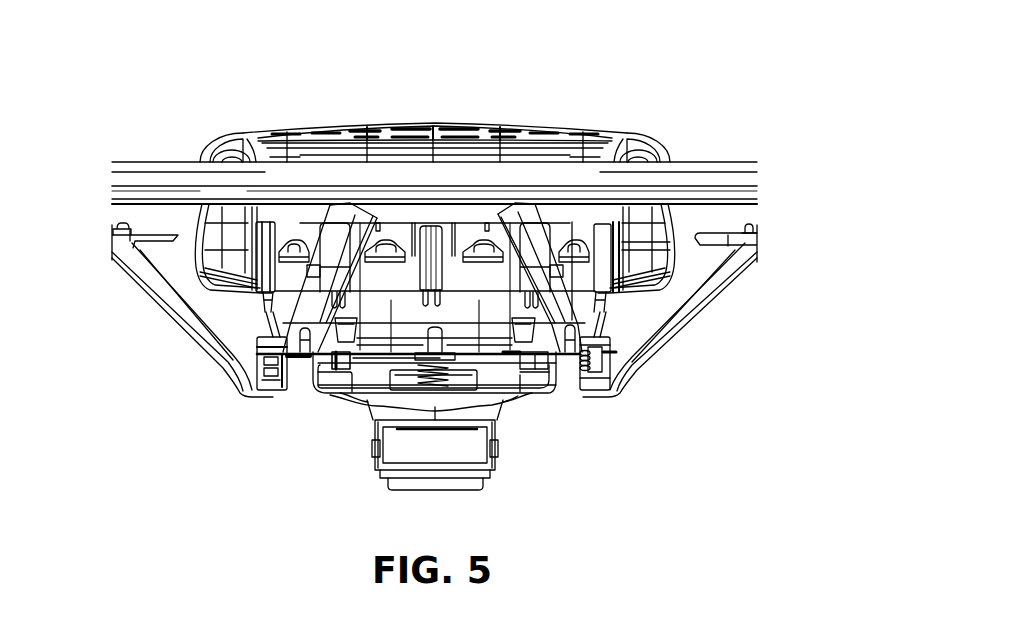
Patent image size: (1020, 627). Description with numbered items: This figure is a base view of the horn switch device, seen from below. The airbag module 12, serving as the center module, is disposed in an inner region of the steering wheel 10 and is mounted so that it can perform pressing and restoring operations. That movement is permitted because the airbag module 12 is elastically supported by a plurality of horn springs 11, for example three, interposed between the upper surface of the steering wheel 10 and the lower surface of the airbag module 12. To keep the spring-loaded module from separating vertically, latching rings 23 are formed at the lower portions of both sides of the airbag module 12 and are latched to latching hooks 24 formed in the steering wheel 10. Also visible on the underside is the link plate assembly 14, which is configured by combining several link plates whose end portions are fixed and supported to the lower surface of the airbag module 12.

The steering wheel 10 is at (687, 165).
The airbag module 12 is at (532, 130).
The link plate assembly 14 is at (503, 358).
The horn spring 11 is at (590, 372).
The latching ring 23 is at (603, 312).
The latching hook 24 is at (608, 372).